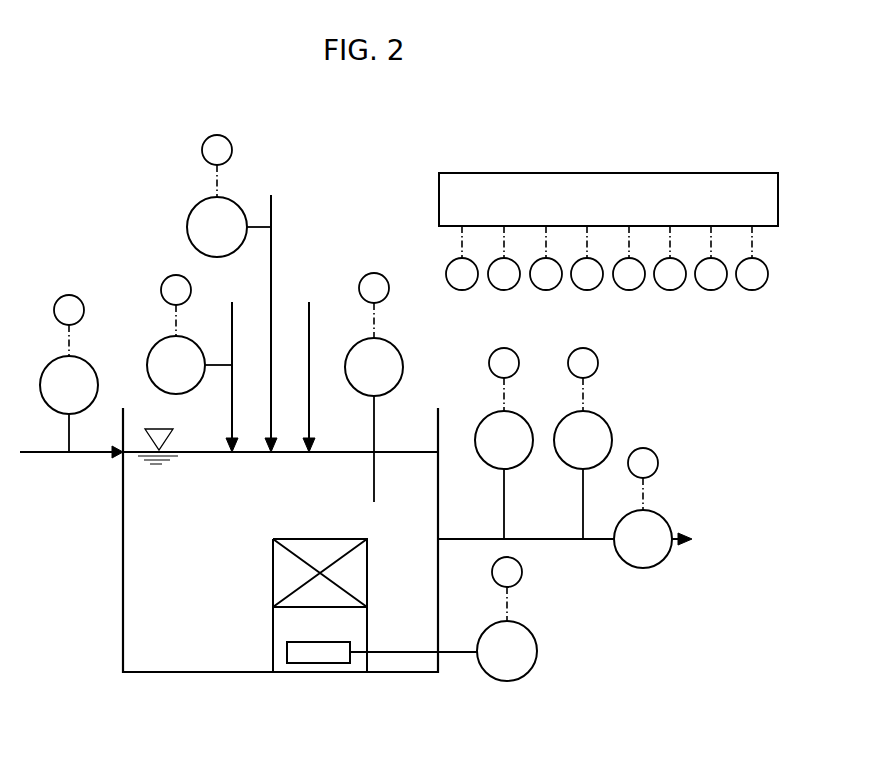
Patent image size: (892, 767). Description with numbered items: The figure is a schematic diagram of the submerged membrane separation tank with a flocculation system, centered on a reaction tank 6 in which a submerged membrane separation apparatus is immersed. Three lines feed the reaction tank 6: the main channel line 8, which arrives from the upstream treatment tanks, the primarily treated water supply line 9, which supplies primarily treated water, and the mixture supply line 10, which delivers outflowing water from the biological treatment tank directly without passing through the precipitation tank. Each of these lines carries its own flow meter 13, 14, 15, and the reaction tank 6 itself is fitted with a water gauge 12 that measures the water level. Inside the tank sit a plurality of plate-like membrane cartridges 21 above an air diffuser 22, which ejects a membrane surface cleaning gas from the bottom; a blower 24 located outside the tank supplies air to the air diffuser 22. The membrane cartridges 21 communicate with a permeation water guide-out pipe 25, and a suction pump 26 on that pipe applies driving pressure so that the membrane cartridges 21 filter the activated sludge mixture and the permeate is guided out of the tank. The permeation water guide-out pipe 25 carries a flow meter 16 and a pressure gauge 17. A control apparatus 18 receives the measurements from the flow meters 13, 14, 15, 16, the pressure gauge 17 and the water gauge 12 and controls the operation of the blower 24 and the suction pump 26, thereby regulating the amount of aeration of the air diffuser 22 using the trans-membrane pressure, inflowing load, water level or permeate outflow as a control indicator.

The reaction tank 6 is at (175, 672).
The main channel line 8 is at (52, 452).
The primarily treated water supply line 9 is at (271, 265).
The mixture supply line 10 is at (232, 330).
The water gauge 12 is at (395, 342).
The flow meter 13 is at (90, 362).
The flow meter 14 is at (232, 202).
The flow meter 15 is at (192, 340).
The flow meter 16 is at (522, 414).
The pressure gauge 17 is at (604, 418).
The control apparatus 18 is at (510, 173).
The membrane cartridge 21 is at (281, 571).
The air diffuser 22 is at (318, 653).
The blower 24 is at (538, 636).
The permeation water guide-out pipe 25 is at (524, 539).
The suction pump 26 is at (665, 518).